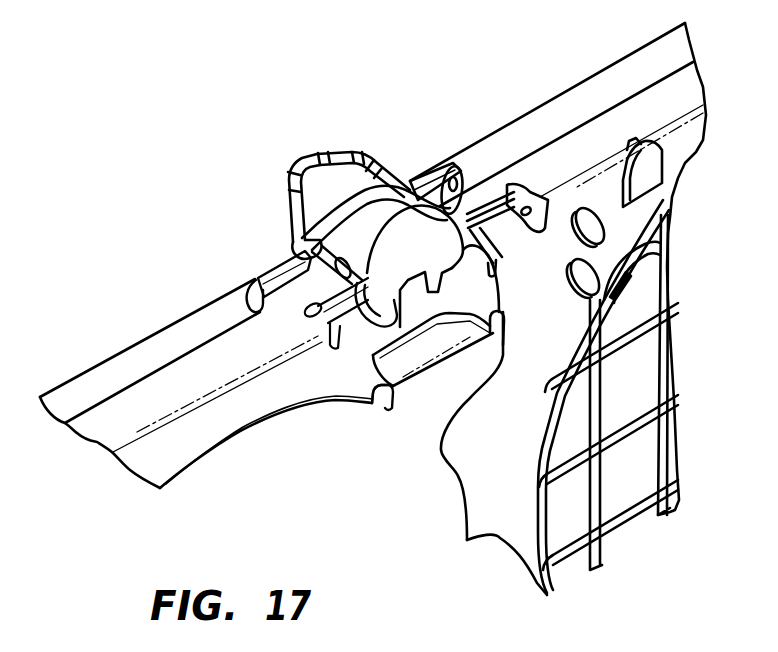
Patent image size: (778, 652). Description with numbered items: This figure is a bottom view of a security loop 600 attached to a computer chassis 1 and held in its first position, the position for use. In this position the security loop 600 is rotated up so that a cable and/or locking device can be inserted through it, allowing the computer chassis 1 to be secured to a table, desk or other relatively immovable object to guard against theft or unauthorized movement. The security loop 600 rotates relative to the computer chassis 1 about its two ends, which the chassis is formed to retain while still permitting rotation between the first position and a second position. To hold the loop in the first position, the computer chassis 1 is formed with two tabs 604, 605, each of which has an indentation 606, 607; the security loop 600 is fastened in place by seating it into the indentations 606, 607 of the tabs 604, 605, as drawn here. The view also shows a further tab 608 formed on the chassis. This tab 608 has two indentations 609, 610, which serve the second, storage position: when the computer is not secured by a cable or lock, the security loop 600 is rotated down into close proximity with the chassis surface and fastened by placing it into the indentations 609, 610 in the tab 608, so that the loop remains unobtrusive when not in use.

The computer chassis 1 is at (124, 360).
The security loop 600 is at (318, 152).
The tab 604 is at (253, 276).
The tab 605 is at (433, 184).
The indentation 606 is at (295, 250).
The indentation 607 is at (396, 172).
The tab 608 is at (416, 355).
The indentation 609 is at (386, 387).
The indentation 610 is at (505, 336).